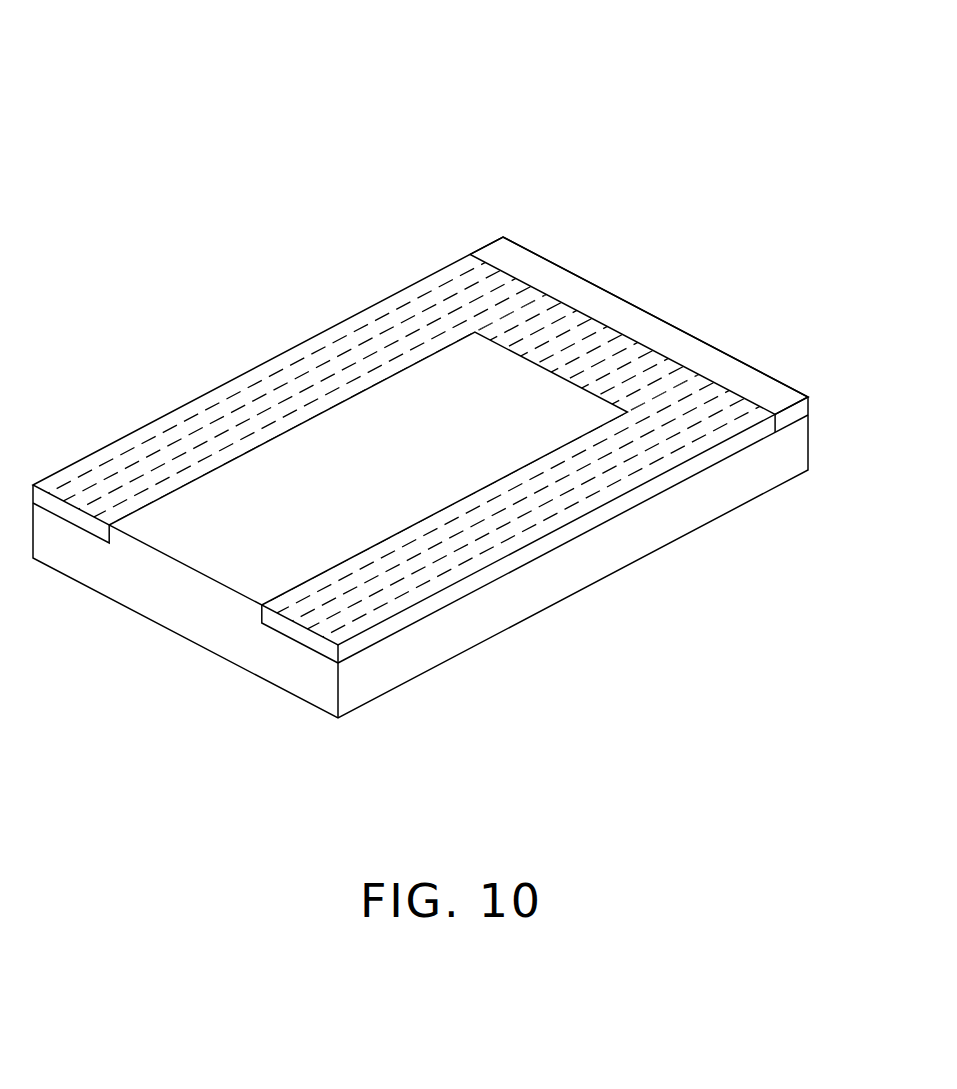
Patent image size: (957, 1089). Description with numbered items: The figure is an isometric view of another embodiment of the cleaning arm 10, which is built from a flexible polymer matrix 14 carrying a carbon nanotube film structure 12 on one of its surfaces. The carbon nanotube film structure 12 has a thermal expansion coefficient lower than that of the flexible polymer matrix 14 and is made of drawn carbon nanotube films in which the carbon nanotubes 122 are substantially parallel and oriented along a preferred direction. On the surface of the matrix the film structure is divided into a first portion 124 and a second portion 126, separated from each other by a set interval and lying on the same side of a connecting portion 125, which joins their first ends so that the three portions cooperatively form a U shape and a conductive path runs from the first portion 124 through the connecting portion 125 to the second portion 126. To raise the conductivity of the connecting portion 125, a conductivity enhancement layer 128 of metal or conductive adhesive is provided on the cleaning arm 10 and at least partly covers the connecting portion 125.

The cleaning arm 10 is at (453, 68).
The carbon nanotube film structure 12 is at (747, 437).
The flexible polymer matrix 14 is at (720, 493).
The carbon nanotubes 122 is at (462, 268).
The first portion 124 is at (200, 422).
The connecting portion 125 is at (617, 362).
The second portion 126 is at (457, 560).
The conductivity enhancement layer 128 is at (563, 287).